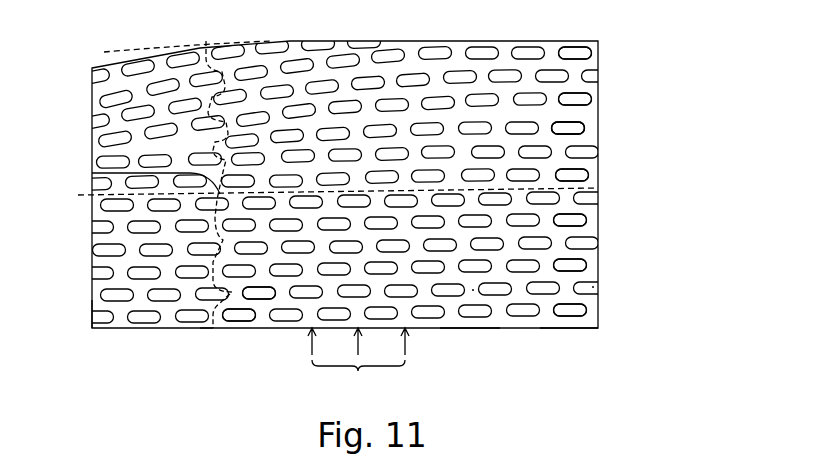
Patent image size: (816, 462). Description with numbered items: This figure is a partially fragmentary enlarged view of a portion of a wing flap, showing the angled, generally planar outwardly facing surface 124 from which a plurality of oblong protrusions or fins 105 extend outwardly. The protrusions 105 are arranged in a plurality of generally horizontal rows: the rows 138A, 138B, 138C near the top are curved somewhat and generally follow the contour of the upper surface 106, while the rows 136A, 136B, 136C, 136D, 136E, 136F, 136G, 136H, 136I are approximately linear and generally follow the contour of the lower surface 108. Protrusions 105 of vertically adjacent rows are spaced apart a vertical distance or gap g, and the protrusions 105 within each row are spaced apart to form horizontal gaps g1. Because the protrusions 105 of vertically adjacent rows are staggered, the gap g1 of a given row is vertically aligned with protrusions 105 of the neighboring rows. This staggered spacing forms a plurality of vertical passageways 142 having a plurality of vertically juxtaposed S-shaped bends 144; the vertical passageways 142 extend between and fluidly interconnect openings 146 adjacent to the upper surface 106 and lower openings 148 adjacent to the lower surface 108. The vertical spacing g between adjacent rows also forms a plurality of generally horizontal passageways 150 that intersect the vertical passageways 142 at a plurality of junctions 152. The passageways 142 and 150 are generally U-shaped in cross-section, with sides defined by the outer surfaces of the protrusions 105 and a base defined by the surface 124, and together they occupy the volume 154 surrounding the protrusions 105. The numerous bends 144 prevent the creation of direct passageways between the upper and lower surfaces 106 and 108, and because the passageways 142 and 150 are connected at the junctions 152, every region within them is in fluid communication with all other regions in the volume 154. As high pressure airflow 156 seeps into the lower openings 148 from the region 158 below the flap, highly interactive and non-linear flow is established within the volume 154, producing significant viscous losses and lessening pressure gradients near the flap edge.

The upper surface 106 is at (513, 41).
The protrusions 105 is at (577, 123).
The lower surface 108 is at (465, 328).
The outwardly facing surface 124 is at (547, 318).
The row 138A is at (592, 53).
The row 138B is at (586, 76).
The row 138C is at (591, 99).
The row 136A is at (584, 128).
The row 136B is at (597, 152).
The row 136C is at (588, 176).
The row 136D is at (593, 198).
The row 136E is at (587, 220).
The row 136F is at (598, 244).
The row 136G is at (587, 265).
The row 136H is at (588, 296).
The row 136I is at (587, 309).
The vertical gap g is at (593, 287).
The horizontal gap g1 is at (472, 290).
The openings 146 is at (165, 49).
The horizontal passageways 150 is at (100, 197).
The junctions 152 is at (92, 173).
The volume 154 is at (118, 319).
The vertical passageways 142 is at (216, 329).
The S-shaped bends 144 is at (237, 298).
The lower openings 148 is at (208, 330).
The high pressure airflow 156 is at (358, 364).
The region 158 is at (281, 395).